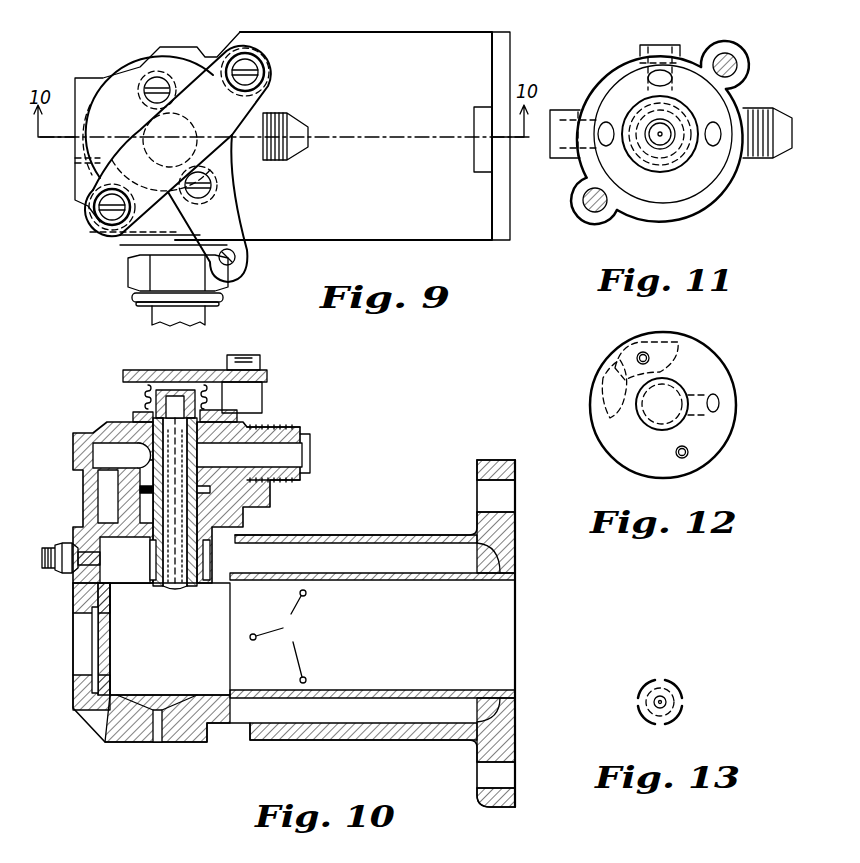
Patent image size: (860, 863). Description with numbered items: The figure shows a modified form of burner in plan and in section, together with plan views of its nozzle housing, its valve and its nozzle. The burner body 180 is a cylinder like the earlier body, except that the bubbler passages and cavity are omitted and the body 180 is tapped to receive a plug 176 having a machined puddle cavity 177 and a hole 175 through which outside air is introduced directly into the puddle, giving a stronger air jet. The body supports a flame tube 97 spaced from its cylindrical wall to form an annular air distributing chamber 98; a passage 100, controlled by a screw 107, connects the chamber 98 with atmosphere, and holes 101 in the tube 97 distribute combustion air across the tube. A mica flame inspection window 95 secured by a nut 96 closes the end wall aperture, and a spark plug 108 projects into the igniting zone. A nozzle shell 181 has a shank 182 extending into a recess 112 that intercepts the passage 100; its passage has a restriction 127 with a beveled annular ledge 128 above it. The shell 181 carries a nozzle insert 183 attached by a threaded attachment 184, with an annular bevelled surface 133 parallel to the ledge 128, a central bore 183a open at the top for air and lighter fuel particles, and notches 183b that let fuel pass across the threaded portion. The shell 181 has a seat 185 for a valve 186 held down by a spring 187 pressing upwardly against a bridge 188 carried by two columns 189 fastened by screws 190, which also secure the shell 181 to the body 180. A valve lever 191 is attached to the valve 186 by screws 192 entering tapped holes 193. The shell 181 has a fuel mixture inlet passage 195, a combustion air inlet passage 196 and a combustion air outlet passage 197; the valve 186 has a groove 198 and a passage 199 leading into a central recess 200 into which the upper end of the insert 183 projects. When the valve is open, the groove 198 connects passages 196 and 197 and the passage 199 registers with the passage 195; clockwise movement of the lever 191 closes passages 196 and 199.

In FIG. 10, the mica flame inspection window 95 is at (92, 655).
In FIG. 10, the nut 96 is at (78, 692).
In FIG. 10, the flame tube 97 is at (396, 690).
In FIG. 10, the annular air distributing chamber 98 is at (412, 560).
In FIG. 10, the passage 100 is at (265, 550).
In FIG. 10, the holes 101 is at (213, 639).
In FIG. 10, the screw 107 is at (50, 572).
In FIG. 9, the spark plug 108 is at (135, 297).
In FIG. 10, the recess 112 is at (152, 557).
In FIG. 10, the restriction 127 is at (190, 588).
In FIG. 10, the beveled annular ledge 128 is at (190, 588).
In FIG. 10, the annular bevelled surface 133 is at (170, 590).
In FIG. 10, the hole 175 is at (158, 708).
In FIG. 10, the plug 176 is at (183, 742).
In FIG. 10, the puddle cavity 177 is at (140, 705).
In FIG. 9, the burner body 180 is at (470, 230).
In FIG. 10, the burner body 180 is at (378, 535).
In FIG. 11, the nozzle shell 181 is at (680, 215).
In FIG. 10, the nozzle shell 181 is at (90, 432).
In FIG. 10, the shank 182 is at (210, 557).
In FIG. 13, the nozzle insert 183 is at (676, 688).
In FIG. 10, the nozzle insert 183 is at (177, 590).
In FIG. 13, the central bore 183a is at (651, 708).
In FIG. 10, the central bore 183a is at (197, 470).
In FIG. 13, the notches 183b is at (683, 702).
In FIG. 10, the notches 183b is at (140, 490).
In FIG. 10, the threaded attachment 184 is at (270, 507).
In FIG. 11, the seat 185 is at (705, 173).
In FIG. 10, the seat 185 is at (270, 487).
In FIG. 9, the valve 186 is at (237, 158).
In FIG. 12, the valve 186 is at (715, 428).
In FIG. 10, the valve 186 is at (262, 400).
In FIG. 10, the spring 187 is at (140, 385).
In FIG. 9, the bridge 188 is at (205, 80).
In FIG. 10, the bridge 188 is at (188, 370).
In FIG. 9, the screw 189 is at (262, 72).
In FIG. 10, the screw 189 is at (268, 385).
In FIG. 9, the screws 190 is at (250, 65).
In FIG. 11, the screws 190 is at (727, 62).
In FIG. 10, the screws 190 is at (262, 358).
In FIG. 9, the valve lever 191 is at (232, 228).
In FIG. 9, the screws 192 is at (150, 91).
In FIG. 12, the holes 193 is at (648, 355).
In FIG. 11, the fuel mixture inlet passage 195 is at (718, 125).
In FIG. 10, the fuel mixture inlet passage 195 is at (290, 455).
In FIG. 11, the combustion air inlet passage 196 is at (655, 80).
In FIG. 9, the combustion air outlet passage 197 is at (98, 140).
In FIG. 11, the combustion air outlet passage 197 is at (605, 145).
In FIG. 10, the combustion air outlet passage 197 is at (105, 453).
In FIG. 12, the groove 198 is at (625, 360).
In FIG. 10, the groove 198 is at (130, 452).
In FIG. 12, the passage 199 is at (718, 400).
In FIG. 12, the central recess 200 is at (672, 385).
In FIG. 10, the central recess 200 is at (174, 410).